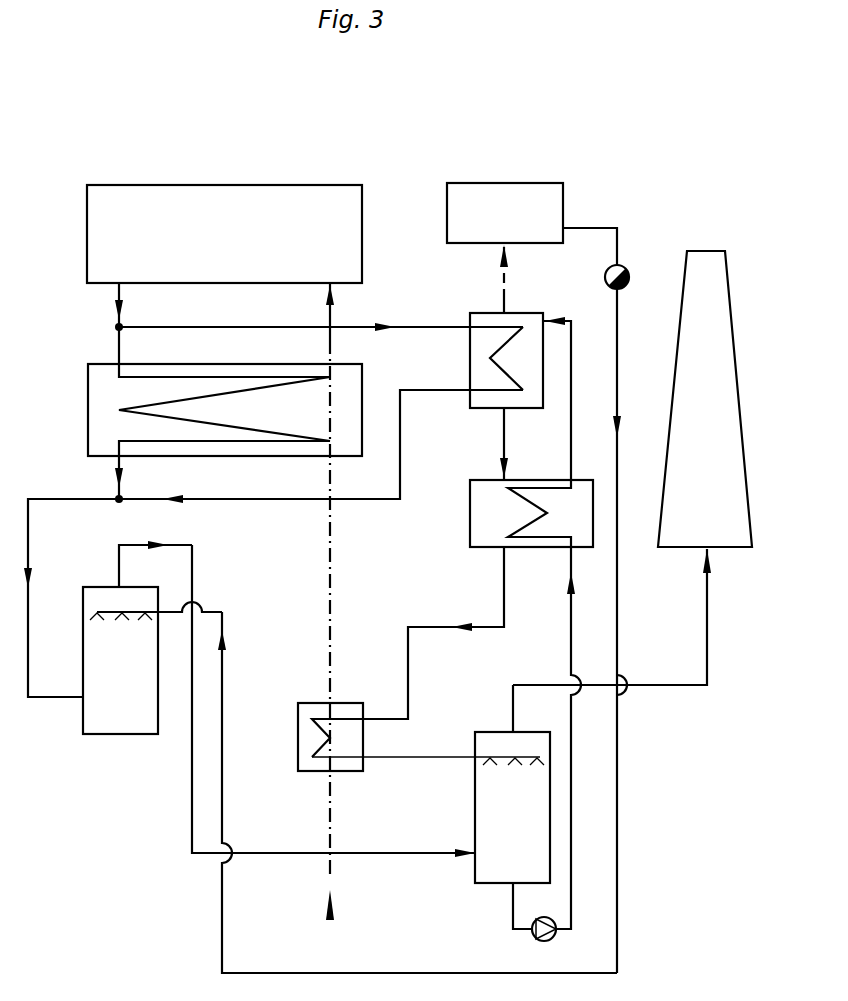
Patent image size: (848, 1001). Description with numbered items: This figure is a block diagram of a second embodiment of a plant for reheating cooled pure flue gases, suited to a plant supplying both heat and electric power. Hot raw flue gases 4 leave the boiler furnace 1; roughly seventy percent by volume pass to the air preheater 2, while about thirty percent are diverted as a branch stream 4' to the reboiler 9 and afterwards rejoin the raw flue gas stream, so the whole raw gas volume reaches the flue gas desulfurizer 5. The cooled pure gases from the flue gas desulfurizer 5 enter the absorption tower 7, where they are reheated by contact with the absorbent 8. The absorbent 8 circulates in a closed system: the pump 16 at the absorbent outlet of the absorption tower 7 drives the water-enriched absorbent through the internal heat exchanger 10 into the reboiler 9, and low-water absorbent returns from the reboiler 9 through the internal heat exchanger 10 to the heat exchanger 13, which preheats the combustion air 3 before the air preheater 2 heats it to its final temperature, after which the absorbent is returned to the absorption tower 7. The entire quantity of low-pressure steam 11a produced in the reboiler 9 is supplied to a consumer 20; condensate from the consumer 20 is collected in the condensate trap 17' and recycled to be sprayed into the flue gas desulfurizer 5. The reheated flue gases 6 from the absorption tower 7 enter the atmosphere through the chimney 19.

The boiler furnace 1 is at (205, 205).
The air preheater 2 is at (97, 408).
The combustion air 3 is at (331, 318).
The raw flue gases 4 is at (95, 307).
The branch stream 4' is at (321, 311).
The flue gas desulfurizer 5 is at (95, 603).
The reheated flue gases 6 is at (190, 782).
The absorption tower 7 is at (490, 868).
The absorbent 8 is at (572, 408).
The reboiler 9 is at (515, 320).
The internal heat exchanger 10 is at (530, 485).
The low-pressure steam 11a is at (502, 291).
The heat exchanger 13 is at (345, 710).
The pump 16 is at (537, 940).
The condensate trap 17' is at (635, 599).
The chimney 19 is at (683, 362).
The consumer 20 is at (498, 195).